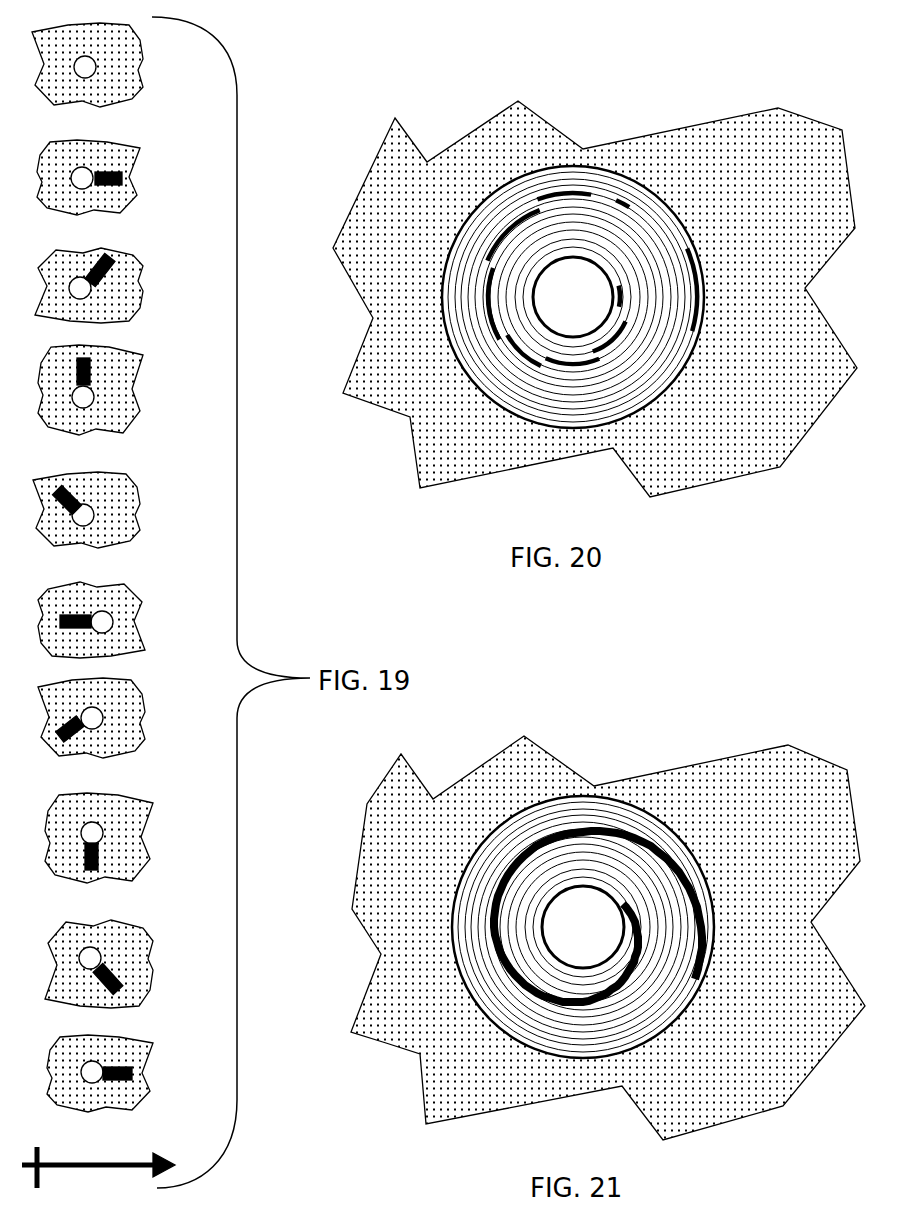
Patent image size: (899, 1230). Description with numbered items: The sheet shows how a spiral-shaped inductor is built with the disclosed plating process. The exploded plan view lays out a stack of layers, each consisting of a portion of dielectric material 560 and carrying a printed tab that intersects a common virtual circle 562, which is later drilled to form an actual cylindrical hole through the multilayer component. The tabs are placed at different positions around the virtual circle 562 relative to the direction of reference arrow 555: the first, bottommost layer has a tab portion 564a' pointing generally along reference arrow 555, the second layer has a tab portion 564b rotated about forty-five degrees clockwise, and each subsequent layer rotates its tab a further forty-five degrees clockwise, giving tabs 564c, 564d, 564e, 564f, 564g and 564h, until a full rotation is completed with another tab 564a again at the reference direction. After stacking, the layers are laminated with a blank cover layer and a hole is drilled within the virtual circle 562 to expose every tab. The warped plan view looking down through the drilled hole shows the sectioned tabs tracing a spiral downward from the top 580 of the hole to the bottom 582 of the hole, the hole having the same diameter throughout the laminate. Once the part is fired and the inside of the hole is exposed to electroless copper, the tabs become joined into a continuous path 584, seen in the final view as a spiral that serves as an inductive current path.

In FIG. 19, the reference arrow 555 is at (70, 1160).
In FIG. 19, the dielectric material 560 is at (123, 75).
In FIG. 20, the dielectric material 560 is at (573, 297).
In FIG. 21, the dielectric material 560 is at (583, 927).
In FIG. 19, the virtual circle 562 is at (82, 65).
In FIG. 19, the tab 564a is at (129, 1084).
In FIG. 20, the tab 564a is at (712, 399).
In FIG. 19, the tab portion 564a' is at (157, 172).
In FIG. 20, the tab portion 564a' is at (719, 198).
In FIG. 19, the tab portion 564b is at (117, 985).
In FIG. 20, the tab portion 564b is at (605, 347).
In FIG. 19, the tab 564c is at (98, 860).
In FIG. 20, the tab 564c is at (568, 367).
In FIG. 19, the tab 564d is at (75, 738).
In FIG. 20, the tab 564d is at (513, 347).
In FIG. 19, the tab 564e is at (77, 617).
In FIG. 20, the tab 564e is at (488, 308).
In FIG. 19, the tab 564f is at (72, 490).
In FIG. 20, the tab 564f is at (500, 235).
In FIG. 19, the tab 564g is at (88, 362).
In FIG. 20, the tab 564g is at (585, 193).
In FIG. 19, the tab 564h is at (110, 257).
In FIG. 20, the tab 564h is at (643, 205).
In FIG. 20, the top of hole 580 is at (488, 197).
In FIG. 20, the bottom of hole 582 is at (558, 258).
In FIG. 21, the continuous path 584 is at (533, 845).